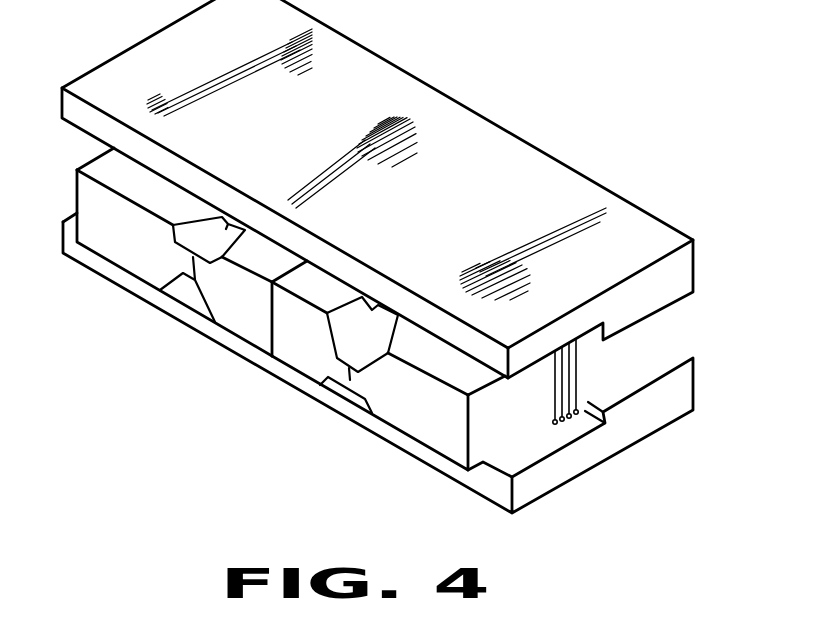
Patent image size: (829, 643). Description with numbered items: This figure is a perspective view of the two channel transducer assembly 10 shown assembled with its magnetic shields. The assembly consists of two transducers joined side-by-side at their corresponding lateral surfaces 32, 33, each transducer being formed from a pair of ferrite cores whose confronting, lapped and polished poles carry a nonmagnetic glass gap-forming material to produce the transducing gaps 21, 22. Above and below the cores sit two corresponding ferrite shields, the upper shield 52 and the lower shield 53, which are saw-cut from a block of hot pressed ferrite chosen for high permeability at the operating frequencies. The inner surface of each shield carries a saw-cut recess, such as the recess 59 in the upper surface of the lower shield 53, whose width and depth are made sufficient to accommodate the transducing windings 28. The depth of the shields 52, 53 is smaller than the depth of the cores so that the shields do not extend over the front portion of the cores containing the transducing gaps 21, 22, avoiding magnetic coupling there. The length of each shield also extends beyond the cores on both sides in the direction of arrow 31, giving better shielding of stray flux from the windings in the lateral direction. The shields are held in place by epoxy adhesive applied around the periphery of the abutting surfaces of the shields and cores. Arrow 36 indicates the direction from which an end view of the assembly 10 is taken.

The two channel transducer assembly 10 is at (556, 101).
The upper shield 52 is at (433, 88).
The lower shield 53 is at (533, 490).
The transducing gap 21 is at (192, 263).
The transducing gap 22 is at (358, 373).
The transducing winding 28 is at (558, 397).
The recess 59 is at (577, 425).
The lateral surface 32 is at (271, 340).
The lateral surface 33 is at (332, 400).
The arrow 31 is at (225, 417).
The arrow 36 is at (740, 556).